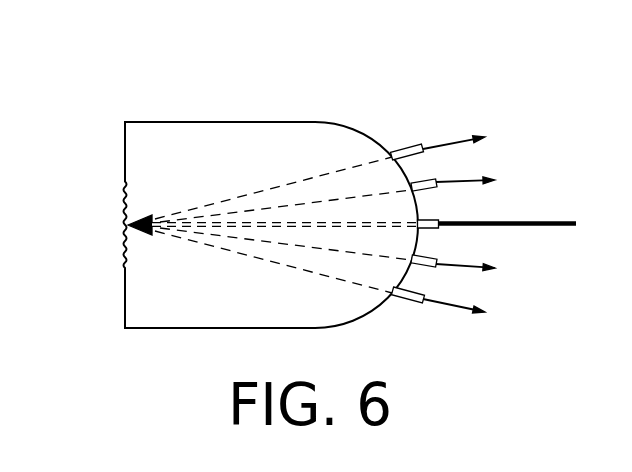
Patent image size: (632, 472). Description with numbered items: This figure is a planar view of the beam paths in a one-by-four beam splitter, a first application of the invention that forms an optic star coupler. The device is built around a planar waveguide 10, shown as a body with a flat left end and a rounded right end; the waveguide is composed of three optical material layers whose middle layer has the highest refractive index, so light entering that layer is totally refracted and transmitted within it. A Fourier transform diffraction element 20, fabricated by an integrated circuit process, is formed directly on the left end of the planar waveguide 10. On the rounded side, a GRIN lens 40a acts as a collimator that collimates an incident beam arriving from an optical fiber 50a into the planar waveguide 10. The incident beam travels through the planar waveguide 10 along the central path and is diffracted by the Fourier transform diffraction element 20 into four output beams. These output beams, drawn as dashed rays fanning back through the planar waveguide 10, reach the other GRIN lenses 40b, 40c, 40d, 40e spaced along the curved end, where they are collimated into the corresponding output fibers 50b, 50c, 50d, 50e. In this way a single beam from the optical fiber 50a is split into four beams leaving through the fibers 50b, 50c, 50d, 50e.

The planar waveguide 10 is at (242, 132).
The Fourier transform diffraction element 20 is at (125, 213).
The GRIN lens 40a is at (440, 218).
The GRIN lens 40b is at (408, 147).
The GRIN lens 40c is at (425, 182).
The GRIN lens 40d is at (420, 257).
The GRIN lens 40e is at (410, 292).
The optical fiber 50a is at (533, 218).
The optical fiber 50b is at (460, 135).
The optical fiber 50c is at (485, 180).
The optical fiber 50d is at (482, 263).
The optical fiber 50e is at (467, 307).